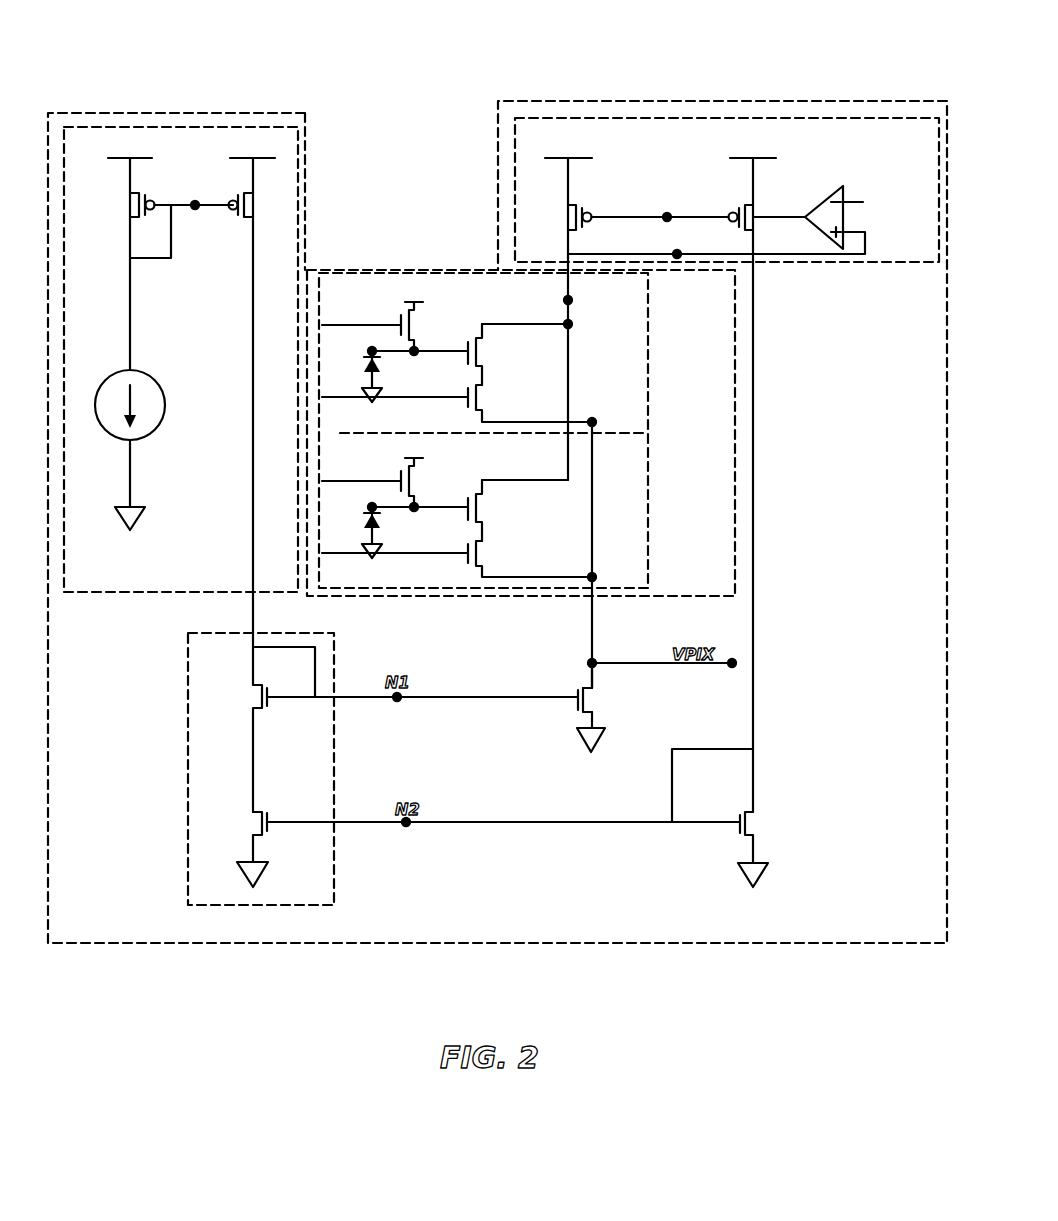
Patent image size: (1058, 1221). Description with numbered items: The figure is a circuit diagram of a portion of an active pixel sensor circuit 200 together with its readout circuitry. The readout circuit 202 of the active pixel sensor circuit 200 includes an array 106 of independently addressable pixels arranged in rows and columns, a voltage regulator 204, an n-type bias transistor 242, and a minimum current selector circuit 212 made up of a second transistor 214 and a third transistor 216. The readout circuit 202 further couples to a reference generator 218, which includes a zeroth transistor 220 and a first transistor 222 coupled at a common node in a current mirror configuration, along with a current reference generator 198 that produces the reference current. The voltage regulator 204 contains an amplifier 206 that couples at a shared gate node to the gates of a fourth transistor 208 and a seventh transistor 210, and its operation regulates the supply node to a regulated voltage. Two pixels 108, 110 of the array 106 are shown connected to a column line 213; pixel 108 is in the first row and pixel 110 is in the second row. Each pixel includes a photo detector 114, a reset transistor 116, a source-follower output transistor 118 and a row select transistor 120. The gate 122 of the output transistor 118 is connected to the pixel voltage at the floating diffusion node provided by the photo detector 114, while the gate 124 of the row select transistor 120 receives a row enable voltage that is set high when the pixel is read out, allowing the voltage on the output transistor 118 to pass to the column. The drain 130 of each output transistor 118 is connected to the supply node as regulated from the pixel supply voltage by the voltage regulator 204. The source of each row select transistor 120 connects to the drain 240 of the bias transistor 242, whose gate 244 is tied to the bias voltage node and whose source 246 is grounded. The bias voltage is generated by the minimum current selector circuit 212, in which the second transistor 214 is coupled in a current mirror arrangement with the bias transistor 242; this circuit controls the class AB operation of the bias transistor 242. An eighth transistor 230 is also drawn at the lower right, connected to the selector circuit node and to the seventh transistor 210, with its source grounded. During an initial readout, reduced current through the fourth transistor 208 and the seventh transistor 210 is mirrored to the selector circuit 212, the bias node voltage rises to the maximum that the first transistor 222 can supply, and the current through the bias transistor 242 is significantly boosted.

The active pixel sensor (APS) circuit 200 is at (378, 112).
The readout circuit 202 is at (488, 944).
The voltage regulator 204 is at (794, 262).
The amplifier 206 is at (820, 200).
The transistor M4 208 is at (572, 197).
The transistor M7 210 is at (735, 203).
The array of pixels 106 is at (660, 418).
The pixel 108 is at (356, 273).
The pixel 110 is at (307, 458).
The photo detector 114 is at (370, 533).
The reset transistor 116 is at (424, 317).
The source-follower output transistor MSF 118 is at (500, 366).
The row select transistor MR 120 is at (495, 391).
The gate of output transistor MSF 122 is at (463, 356).
The gate of row select transistor MR 124 is at (463, 401).
The drain of output transistor MSF 130 is at (480, 326).
The current reference generator 198 is at (150, 380).
The minimum current selector circuit 212 is at (334, 770).
The column line 213 is at (592, 634).
The transistor M2 214 is at (268, 706).
The transistor M3 216 is at (268, 830).
The reference generator 218 is at (138, 593).
The transistor M0 220 is at (164, 255).
The transistor M1 222 is at (246, 224).
The transistor M8 230 is at (740, 836).
The drain of bias transistor M5 240 is at (596, 682).
The bias transistor M5 242 is at (603, 707).
The gate of bias transistor M5 244 is at (578, 702).
The source of bias transistor M5 246 is at (595, 718).